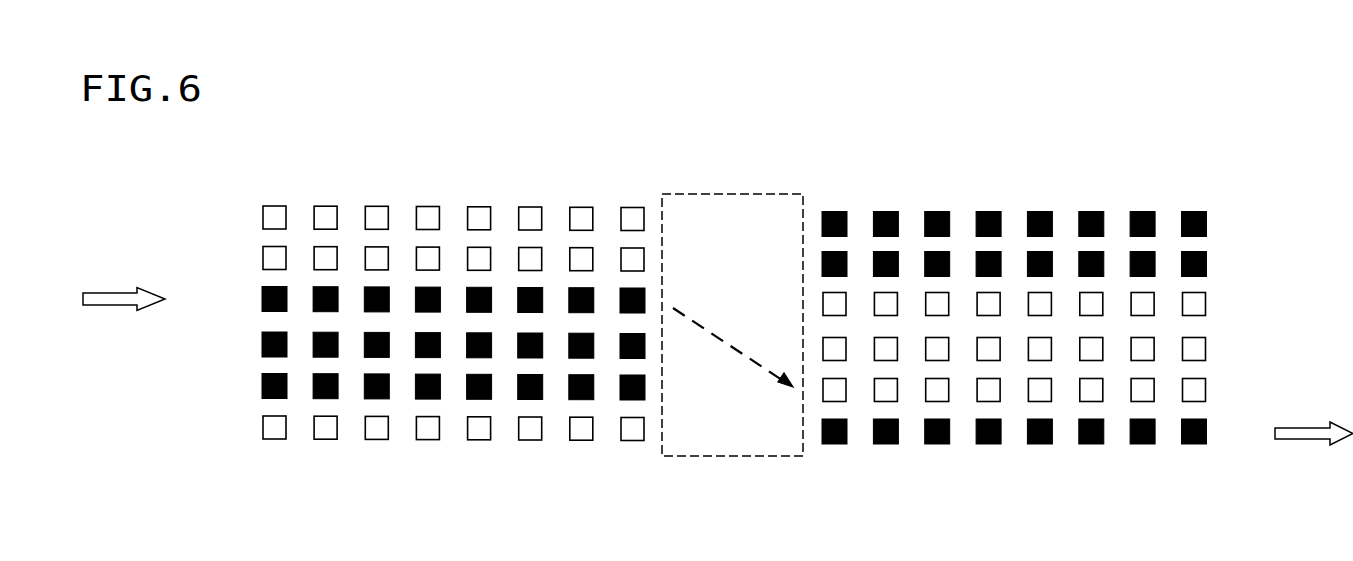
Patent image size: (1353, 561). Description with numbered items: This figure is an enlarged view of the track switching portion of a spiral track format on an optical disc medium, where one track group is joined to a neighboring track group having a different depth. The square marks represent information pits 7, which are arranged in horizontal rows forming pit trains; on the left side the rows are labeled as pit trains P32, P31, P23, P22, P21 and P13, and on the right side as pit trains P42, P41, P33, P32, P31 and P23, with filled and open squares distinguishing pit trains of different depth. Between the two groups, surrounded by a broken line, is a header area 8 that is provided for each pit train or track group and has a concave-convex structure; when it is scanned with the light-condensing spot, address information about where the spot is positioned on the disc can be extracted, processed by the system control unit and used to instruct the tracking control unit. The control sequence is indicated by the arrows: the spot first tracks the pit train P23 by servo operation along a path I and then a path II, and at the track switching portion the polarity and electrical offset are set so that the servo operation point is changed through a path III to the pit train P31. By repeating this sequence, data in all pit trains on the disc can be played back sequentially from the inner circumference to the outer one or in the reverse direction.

The information pit 7 is at (336, 219).
The header area 8 is at (732, 194).
The pit train P32 is at (732, 287).
The pit train P31 is at (732, 328).
The pit train P23 is at (732, 368).
The pit train P22 is at (422, 348).
The pit train P21 is at (422, 390).
The pit train P13 is at (421, 431).
The pit train P42 is at (1044, 227).
The pit train P41 is at (1044, 267).
The pit train P33 is at (1044, 308).
The path I is at (1314, 418).
The path II is at (124, 282).
The path III is at (733, 345).